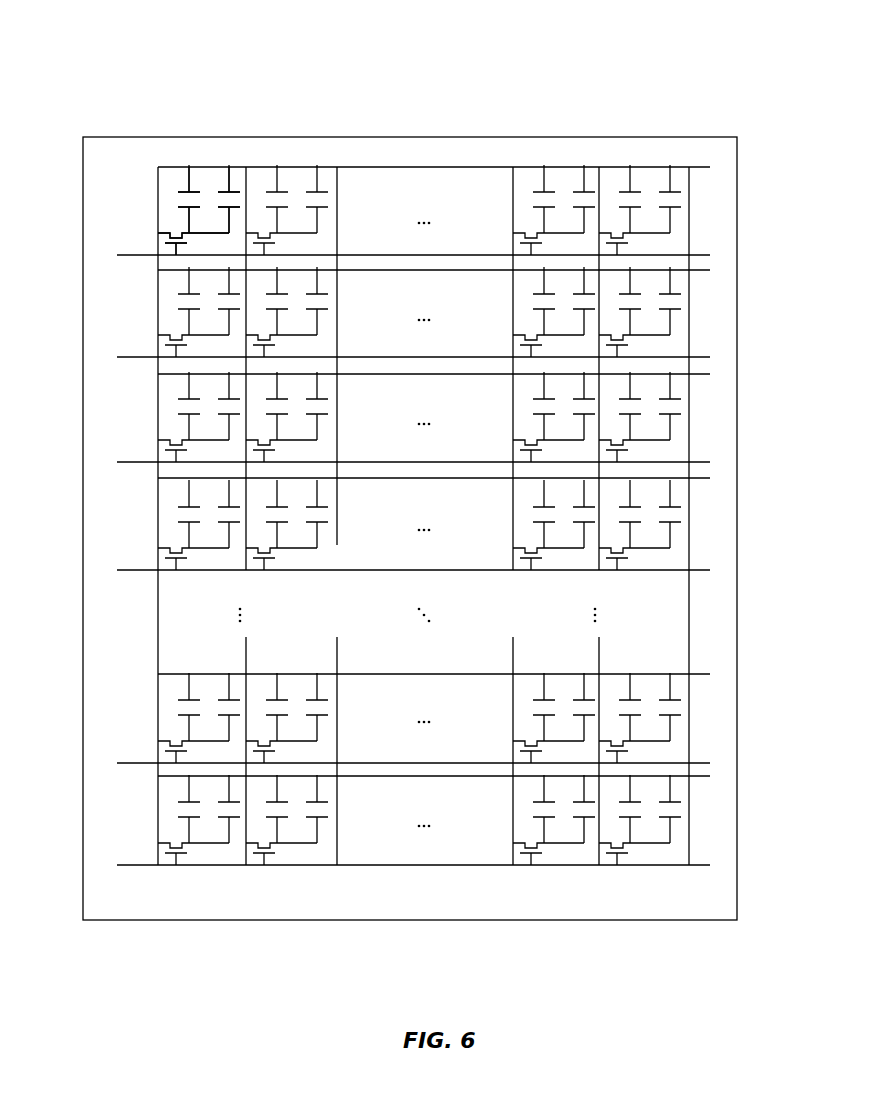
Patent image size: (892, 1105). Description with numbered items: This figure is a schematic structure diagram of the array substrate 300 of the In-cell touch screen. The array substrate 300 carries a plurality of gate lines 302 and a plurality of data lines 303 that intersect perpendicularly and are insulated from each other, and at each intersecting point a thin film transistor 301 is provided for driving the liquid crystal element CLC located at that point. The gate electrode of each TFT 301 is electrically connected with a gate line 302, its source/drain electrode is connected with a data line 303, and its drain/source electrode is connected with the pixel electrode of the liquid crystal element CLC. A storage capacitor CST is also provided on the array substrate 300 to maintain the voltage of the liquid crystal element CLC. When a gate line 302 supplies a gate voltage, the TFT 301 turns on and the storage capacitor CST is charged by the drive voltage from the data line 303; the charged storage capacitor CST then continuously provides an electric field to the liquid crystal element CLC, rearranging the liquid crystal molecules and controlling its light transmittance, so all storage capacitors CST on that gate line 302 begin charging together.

The array substrate 300 is at (70, 28).
The thin film transistor 301 is at (174, 229).
The gate line 302 is at (673, 358).
The data line 303 is at (690, 208).
The liquid crystal element CLC is at (184, 187).
The storage capacitor CST is at (237, 190).